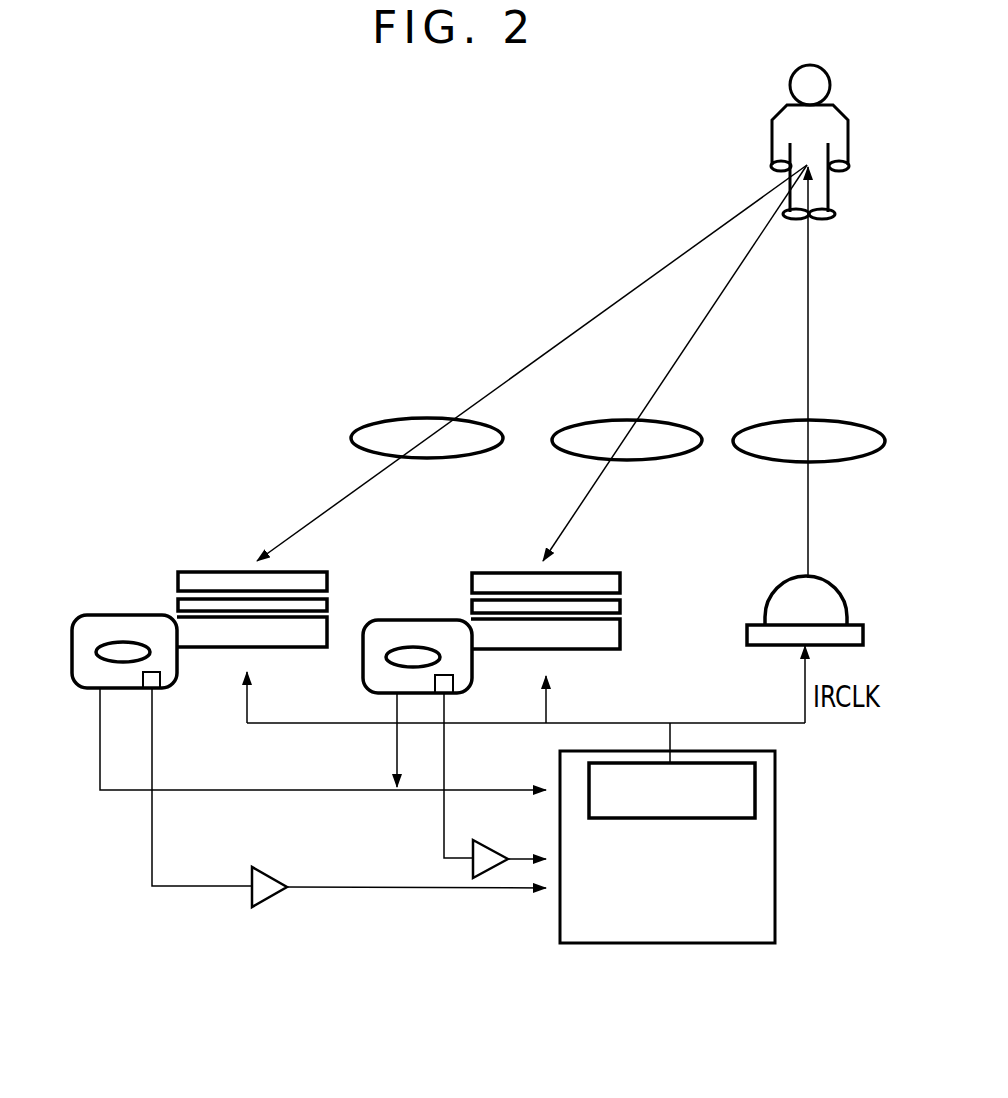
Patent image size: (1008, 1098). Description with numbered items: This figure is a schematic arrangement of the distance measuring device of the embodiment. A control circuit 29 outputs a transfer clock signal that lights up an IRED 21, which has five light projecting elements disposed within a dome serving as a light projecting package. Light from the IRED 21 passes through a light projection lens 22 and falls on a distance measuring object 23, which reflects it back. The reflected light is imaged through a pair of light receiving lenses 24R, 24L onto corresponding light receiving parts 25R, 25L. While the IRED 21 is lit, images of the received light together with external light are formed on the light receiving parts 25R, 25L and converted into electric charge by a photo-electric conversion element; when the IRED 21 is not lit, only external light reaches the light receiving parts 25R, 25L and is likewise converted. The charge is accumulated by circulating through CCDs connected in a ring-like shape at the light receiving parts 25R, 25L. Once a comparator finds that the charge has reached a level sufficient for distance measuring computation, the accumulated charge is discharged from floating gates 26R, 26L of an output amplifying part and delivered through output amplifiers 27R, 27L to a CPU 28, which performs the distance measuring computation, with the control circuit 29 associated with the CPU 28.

The IRED 21 is at (790, 603).
The light projection lens 22 is at (772, 425).
The distance measuring object 23 is at (772, 126).
The light receiving lens 24L is at (406, 420).
The light receiving lens 24R is at (613, 420).
The light receiving part 25L is at (197, 570).
The light receiving part 25R is at (494, 578).
The floating gate 26L is at (158, 681).
The floating gate 26R is at (453, 686).
The output amplifier 27L is at (264, 893).
The output amplifier 27R is at (483, 870).
The CPU 28 is at (753, 893).
The control circuit 29 is at (747, 793).